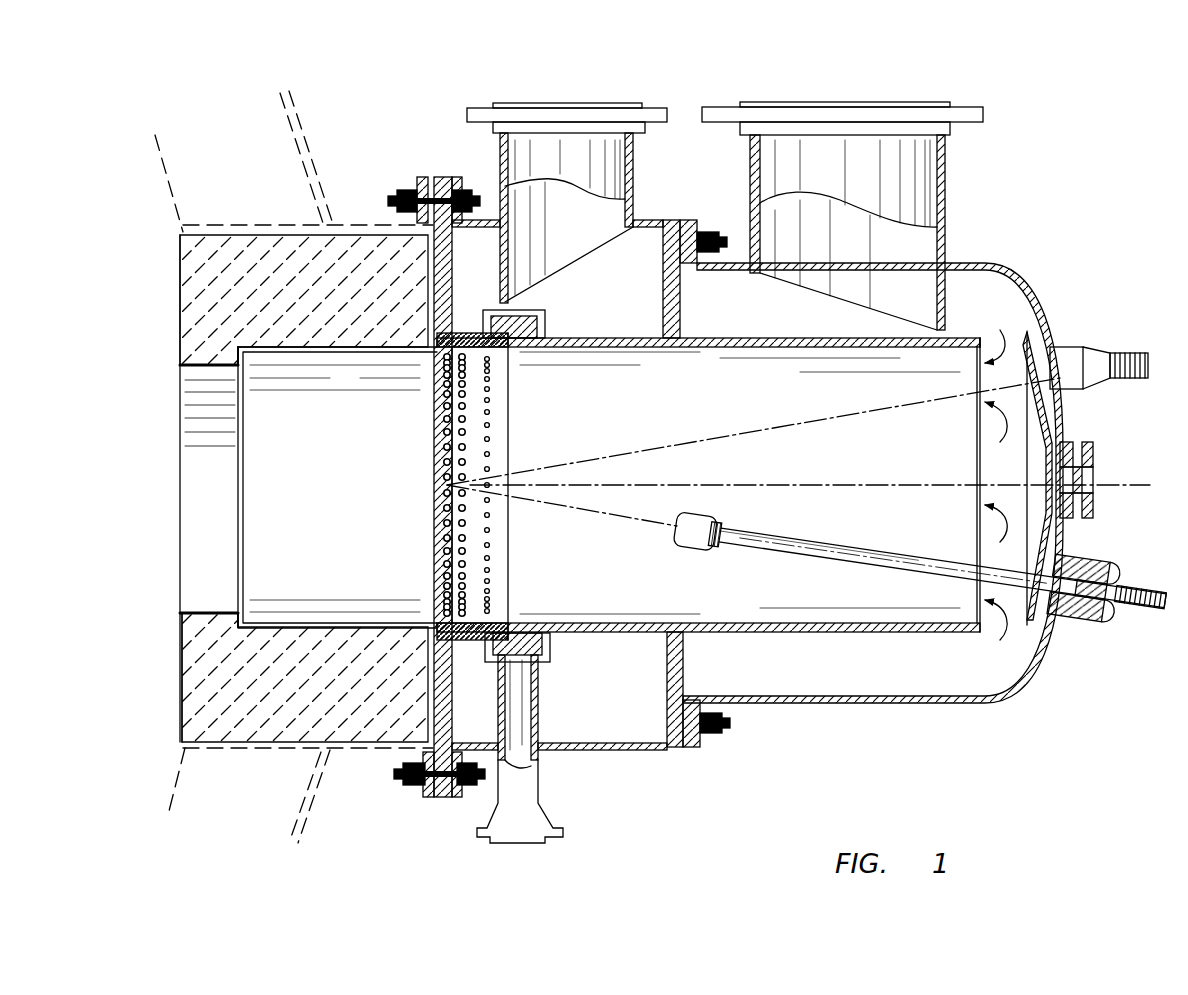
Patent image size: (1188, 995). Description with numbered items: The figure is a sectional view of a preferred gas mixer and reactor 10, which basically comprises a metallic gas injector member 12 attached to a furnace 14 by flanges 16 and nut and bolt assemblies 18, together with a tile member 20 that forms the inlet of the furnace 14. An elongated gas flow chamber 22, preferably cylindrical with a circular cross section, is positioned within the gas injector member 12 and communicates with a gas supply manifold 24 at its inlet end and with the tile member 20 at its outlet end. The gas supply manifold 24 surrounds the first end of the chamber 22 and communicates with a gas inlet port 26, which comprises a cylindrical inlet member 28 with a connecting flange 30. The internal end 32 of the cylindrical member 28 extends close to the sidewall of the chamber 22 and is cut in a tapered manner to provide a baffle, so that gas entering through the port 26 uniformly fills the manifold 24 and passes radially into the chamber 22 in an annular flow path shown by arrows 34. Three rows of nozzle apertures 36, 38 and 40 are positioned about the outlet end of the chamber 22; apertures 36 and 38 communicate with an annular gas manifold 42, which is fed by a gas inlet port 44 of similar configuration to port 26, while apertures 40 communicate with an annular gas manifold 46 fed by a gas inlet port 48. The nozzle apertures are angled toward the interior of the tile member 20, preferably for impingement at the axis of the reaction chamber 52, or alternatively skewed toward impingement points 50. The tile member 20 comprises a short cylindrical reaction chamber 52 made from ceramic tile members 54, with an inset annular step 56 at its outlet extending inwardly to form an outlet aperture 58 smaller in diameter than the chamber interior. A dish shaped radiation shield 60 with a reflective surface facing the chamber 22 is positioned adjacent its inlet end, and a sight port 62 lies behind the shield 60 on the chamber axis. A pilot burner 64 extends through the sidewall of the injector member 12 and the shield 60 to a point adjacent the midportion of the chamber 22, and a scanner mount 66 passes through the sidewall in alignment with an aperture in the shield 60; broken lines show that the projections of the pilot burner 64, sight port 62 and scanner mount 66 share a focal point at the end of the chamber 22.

The gas mixer and reactor 10 is at (997, 250).
The gas injector member 12 is at (768, 706).
The furnace 14 is at (298, 140).
The flanges 16 is at (440, 180).
The nut and bolt assemblies 18 is at (462, 200).
The tile member 20 is at (180, 298).
The elongated gas flow chamber 22 is at (590, 625).
The gas supply manifold 24 is at (756, 315).
The gas inlet port 26 is at (874, 190).
The cylindrical inlet member 28 is at (945, 180).
The connecting flange 30 is at (985, 114).
The internal end 32 is at (945, 328).
The arrows 34 is at (1007, 491).
The nozzle apertures 36 is at (444, 400).
The nozzle apertures 38 is at (458, 416).
The nozzle apertures 40 is at (492, 412).
The annular gas manifold 42 is at (617, 307).
The gas inlet port 44 is at (588, 104).
The annular gas manifold 46 is at (516, 485).
The gas inlet port 48 is at (553, 843).
The impingement points 50 is at (240, 355).
The reaction chamber 52 is at (350, 500).
The ceramic tile members 54 is at (345, 308).
The inset annular step 56 is at (190, 627).
The outlet aperture 58 is at (205, 480).
The radiation shield 60 is at (1053, 422).
The sight port 62 is at (1093, 462).
The pilot burner 64 is at (920, 565).
The scanner mount 66 is at (1082, 352).